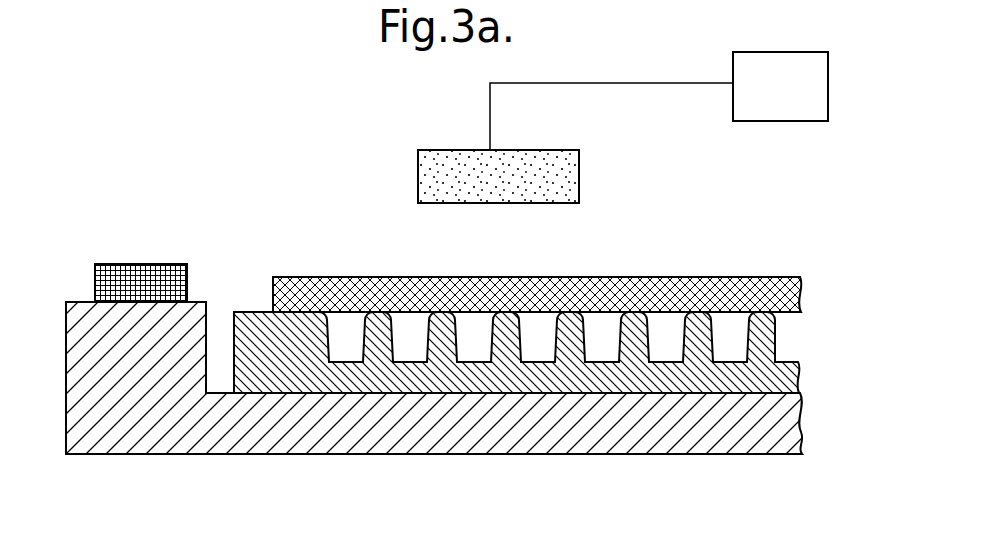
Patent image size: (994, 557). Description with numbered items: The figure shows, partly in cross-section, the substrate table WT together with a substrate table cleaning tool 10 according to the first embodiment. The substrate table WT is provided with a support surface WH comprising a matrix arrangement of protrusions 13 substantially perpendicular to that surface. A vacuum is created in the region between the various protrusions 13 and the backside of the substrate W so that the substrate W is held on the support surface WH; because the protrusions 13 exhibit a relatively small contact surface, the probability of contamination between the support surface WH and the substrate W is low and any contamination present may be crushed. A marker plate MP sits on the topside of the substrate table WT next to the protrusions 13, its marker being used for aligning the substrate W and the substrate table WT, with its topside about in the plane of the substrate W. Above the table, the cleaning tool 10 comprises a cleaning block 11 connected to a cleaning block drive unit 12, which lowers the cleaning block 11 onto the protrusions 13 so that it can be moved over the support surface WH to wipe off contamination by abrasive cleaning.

The substrate table cleaning tool 10 is at (848, 82).
The cleaning block 11 is at (440, 168).
The cleaning block drive unit 12 is at (793, 98).
The protrusions 13 is at (634, 320).
The marker plate MP is at (130, 268).
The substrate W is at (790, 290).
The support surface WH is at (788, 377).
The substrate table WT is at (182, 480).